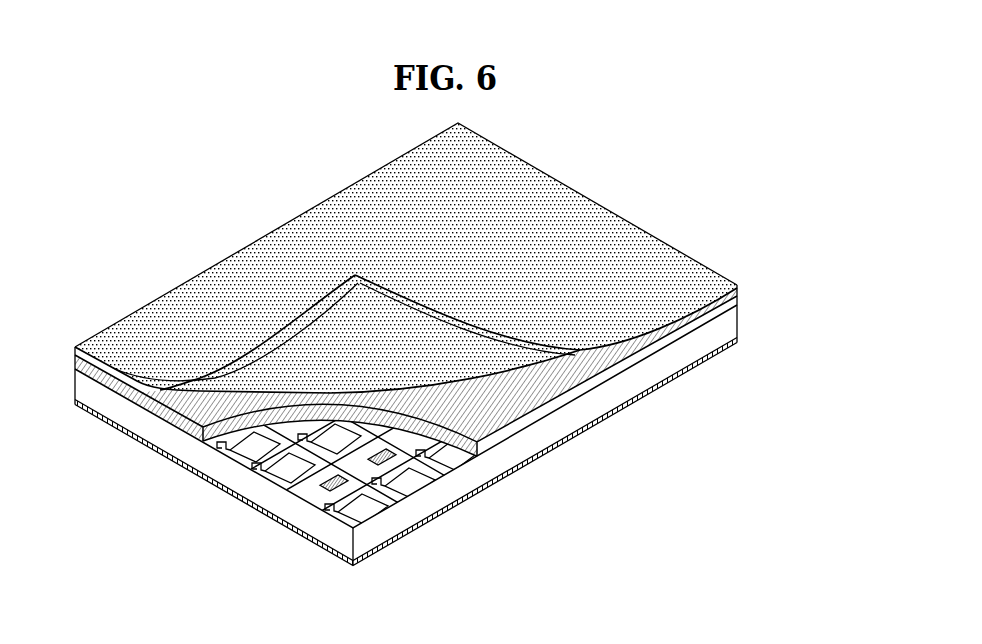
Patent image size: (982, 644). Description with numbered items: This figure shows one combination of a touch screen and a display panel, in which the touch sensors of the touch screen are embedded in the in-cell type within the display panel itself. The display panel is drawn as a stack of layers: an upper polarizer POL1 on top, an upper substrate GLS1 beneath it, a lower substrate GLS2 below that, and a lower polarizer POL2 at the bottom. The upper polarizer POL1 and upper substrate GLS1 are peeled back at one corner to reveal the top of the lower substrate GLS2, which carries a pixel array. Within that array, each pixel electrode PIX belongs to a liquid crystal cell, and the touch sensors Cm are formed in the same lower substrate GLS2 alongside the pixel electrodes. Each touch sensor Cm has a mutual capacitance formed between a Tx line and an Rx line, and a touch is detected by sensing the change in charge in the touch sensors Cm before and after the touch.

The upper polarizer POL1 is at (740, 287).
The upper substrate GLS1 is at (731, 300).
The lower substrate GLS2 is at (731, 323).
The lower polarizer POL2 is at (740, 341).
The touch sensors Cm is at (321, 486).
The pixel electrode PIX is at (340, 513).